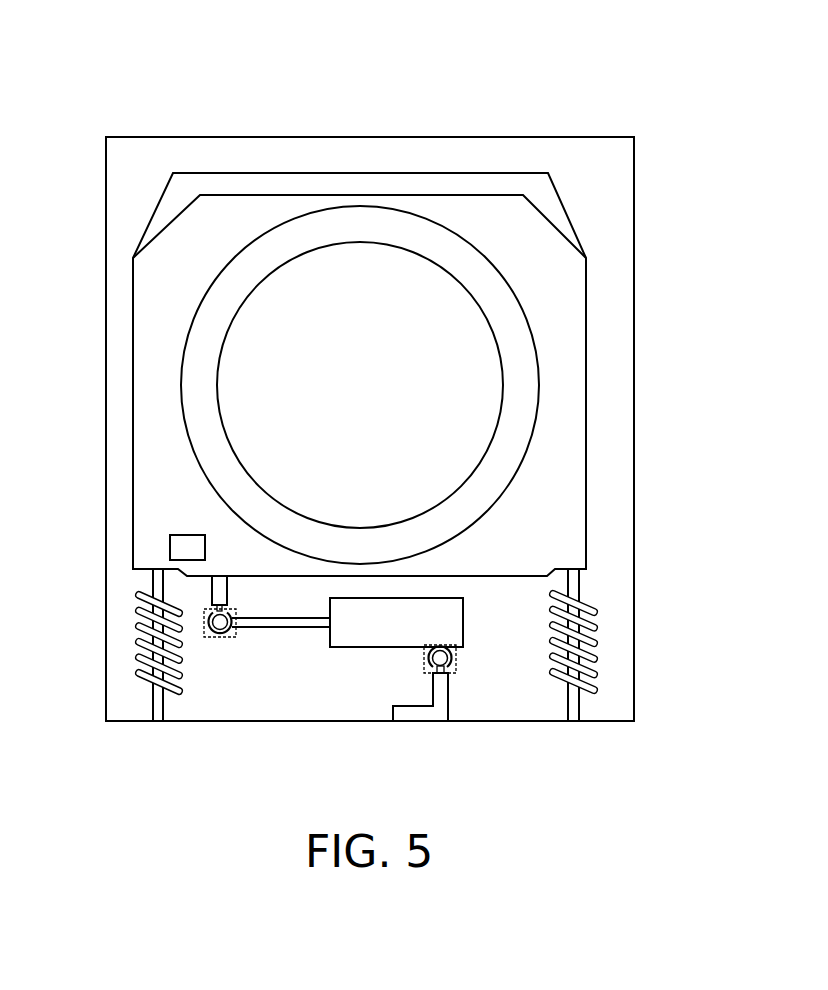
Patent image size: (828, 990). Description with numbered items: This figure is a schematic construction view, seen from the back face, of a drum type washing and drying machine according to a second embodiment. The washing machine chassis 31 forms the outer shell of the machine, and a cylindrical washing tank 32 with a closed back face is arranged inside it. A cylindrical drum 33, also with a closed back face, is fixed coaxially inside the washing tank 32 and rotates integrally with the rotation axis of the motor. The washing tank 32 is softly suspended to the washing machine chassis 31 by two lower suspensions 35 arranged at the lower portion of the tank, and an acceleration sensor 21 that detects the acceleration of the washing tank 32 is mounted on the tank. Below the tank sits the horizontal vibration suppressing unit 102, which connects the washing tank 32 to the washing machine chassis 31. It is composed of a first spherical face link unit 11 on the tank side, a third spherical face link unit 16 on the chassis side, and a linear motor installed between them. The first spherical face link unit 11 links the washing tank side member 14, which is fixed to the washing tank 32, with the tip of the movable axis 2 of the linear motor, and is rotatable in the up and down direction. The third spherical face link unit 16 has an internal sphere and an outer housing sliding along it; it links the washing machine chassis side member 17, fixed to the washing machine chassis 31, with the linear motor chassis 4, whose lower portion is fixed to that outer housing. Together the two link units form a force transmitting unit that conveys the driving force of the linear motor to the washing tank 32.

The washing machine chassis 31 is at (228, 137).
The washing tank 32 is at (460, 172).
The drum 33 is at (355, 222).
The lower suspensions 35 is at (132, 634).
The acceleration sensor 21 is at (178, 545).
The washing tank side member 14 is at (210, 594).
The first spherical face link unit 11 is at (219, 645).
The movable axis 2 is at (297, 630).
The linear motor chassis 4 is at (360, 650).
The third spherical face link unit 16 is at (456, 664).
The washing machine chassis side member 17 is at (428, 712).
The horizontal vibration suppressing unit 102 is at (250, 688).